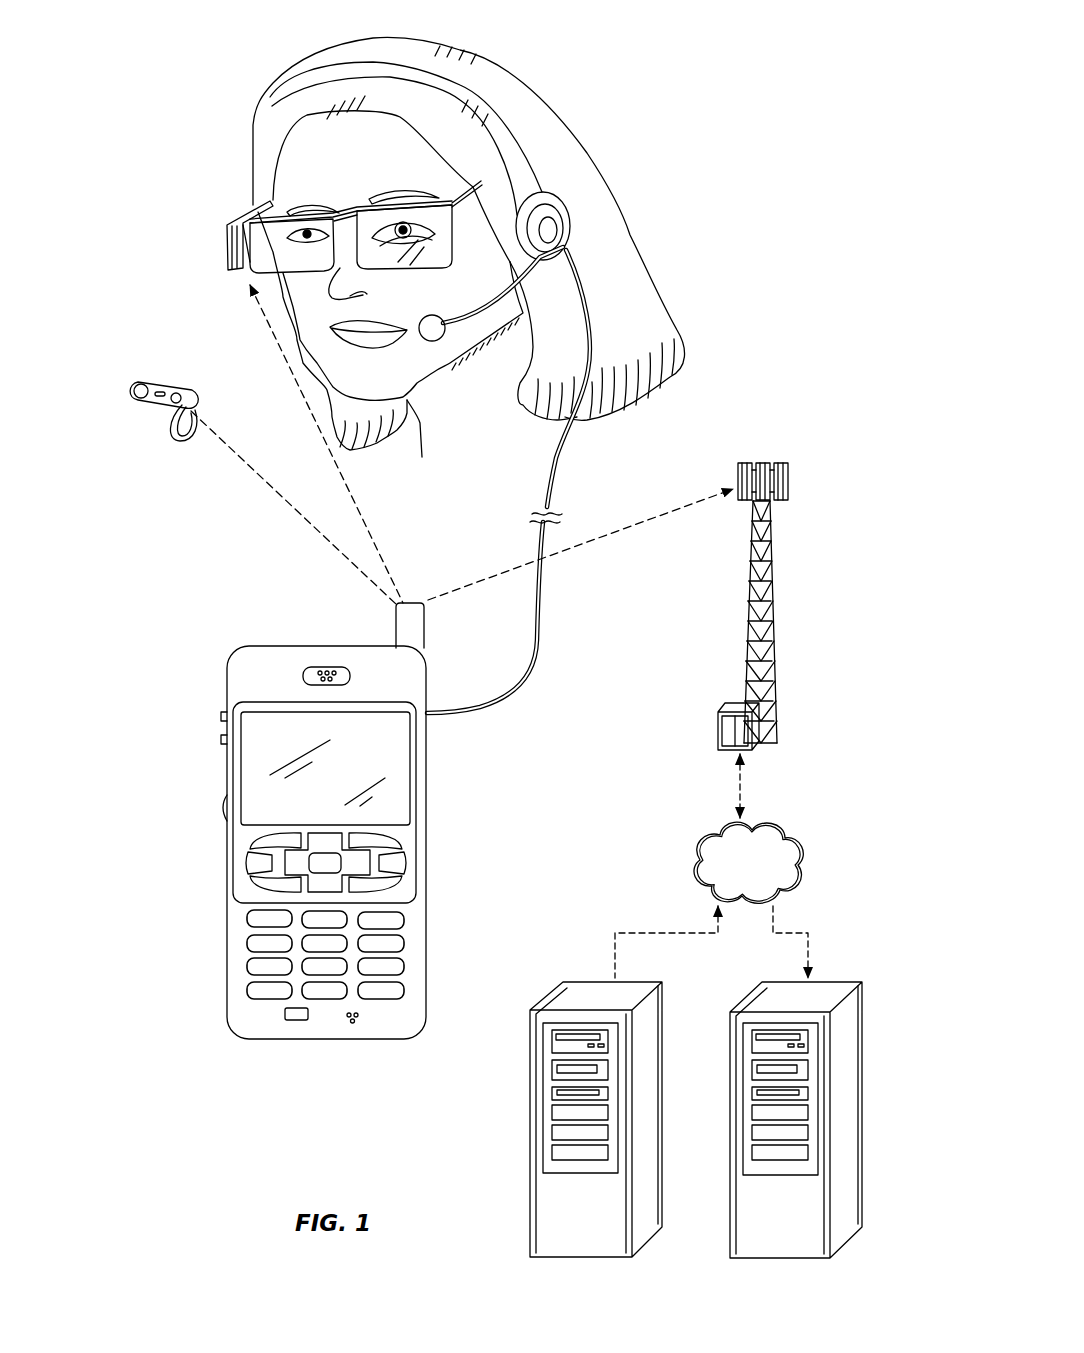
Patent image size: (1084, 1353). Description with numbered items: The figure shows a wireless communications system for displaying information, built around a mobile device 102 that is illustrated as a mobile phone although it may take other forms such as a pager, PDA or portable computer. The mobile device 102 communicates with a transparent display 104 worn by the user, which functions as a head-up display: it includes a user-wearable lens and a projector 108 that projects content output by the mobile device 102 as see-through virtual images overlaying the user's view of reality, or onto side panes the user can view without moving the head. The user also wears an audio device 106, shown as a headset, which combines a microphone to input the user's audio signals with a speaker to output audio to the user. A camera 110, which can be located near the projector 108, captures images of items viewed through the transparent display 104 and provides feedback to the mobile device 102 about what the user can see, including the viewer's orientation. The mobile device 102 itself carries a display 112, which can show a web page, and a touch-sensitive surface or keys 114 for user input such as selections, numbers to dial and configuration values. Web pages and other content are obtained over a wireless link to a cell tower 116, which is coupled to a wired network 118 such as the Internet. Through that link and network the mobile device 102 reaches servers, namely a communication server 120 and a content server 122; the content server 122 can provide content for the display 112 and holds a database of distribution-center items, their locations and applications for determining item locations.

The mobile device 102 is at (330, 838).
The transparent display 104 is at (284, 224).
The audio device 106 is at (570, 228).
The projector 108 is at (256, 212).
The camera 110 is at (143, 380).
The display 112 is at (396, 782).
The keys 114 is at (286, 920).
The cell tower 116 is at (777, 592).
The wired network 118 is at (801, 847).
The communication server 120 is at (530, 1133).
The content server 122 is at (860, 1107).